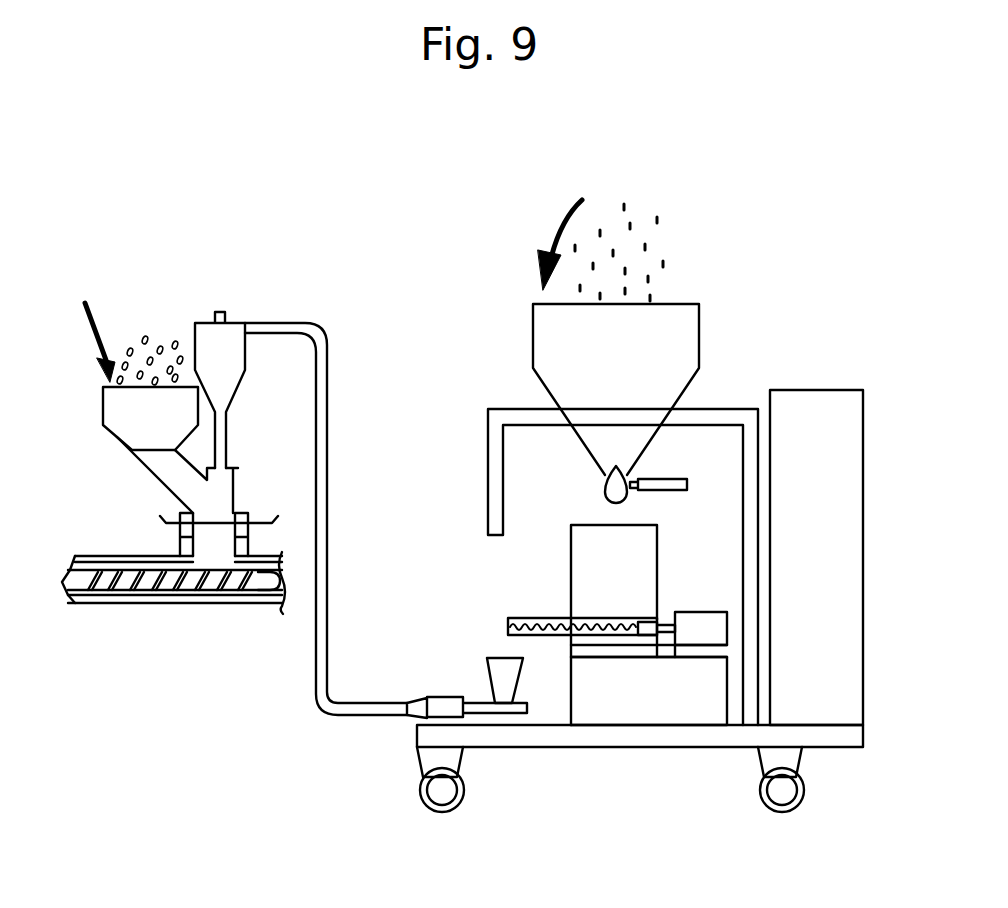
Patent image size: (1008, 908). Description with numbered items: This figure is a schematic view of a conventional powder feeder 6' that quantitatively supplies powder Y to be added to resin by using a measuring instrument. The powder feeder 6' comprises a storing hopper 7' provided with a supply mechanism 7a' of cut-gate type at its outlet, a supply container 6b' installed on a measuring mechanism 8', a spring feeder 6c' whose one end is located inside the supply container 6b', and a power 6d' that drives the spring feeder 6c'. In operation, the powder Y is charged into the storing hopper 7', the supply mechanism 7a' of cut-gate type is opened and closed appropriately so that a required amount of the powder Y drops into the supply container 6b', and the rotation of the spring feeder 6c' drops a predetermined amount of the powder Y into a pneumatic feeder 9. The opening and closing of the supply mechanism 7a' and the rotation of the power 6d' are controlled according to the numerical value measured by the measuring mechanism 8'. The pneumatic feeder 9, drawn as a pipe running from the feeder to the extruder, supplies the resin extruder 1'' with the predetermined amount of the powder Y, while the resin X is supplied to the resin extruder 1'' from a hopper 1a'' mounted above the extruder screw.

The resin extruder 1'' is at (173, 502).
The hopper 1a'' is at (132, 447).
The resin X is at (167, 347).
The powder Y is at (656, 246).
The pneumatic feeder 9 is at (328, 654).
The storing hopper 7' is at (676, 379).
The supply mechanism of cut-gate type 7a' is at (608, 484).
The powder feeder 6' is at (581, 625).
The supply container 6b' is at (587, 625).
The spring feeder 6c' is at (555, 616).
The power 6d' is at (692, 601).
The measuring mechanism 8' is at (640, 734).